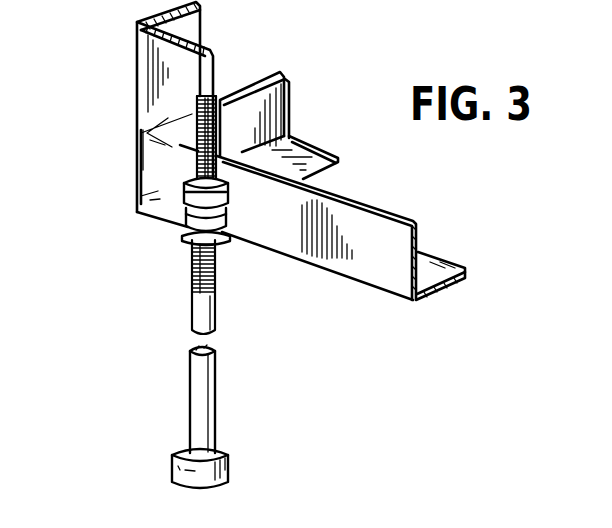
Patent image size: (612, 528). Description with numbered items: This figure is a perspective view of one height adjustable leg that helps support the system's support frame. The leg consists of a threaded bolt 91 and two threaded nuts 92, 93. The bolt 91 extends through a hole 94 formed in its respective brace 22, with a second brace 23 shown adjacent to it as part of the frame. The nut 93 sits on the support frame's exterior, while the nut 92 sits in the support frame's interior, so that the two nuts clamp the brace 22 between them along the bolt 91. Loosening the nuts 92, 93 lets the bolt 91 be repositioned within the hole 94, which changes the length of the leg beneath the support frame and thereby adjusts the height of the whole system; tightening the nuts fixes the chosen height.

The brace 22 is at (380, 277).
The brace 23 is at (137, 65).
The threaded bolt 91 is at (215, 383).
The threaded nut 92 is at (187, 188).
The threaded nut 93 is at (186, 239).
The hole 94 is at (186, 214).